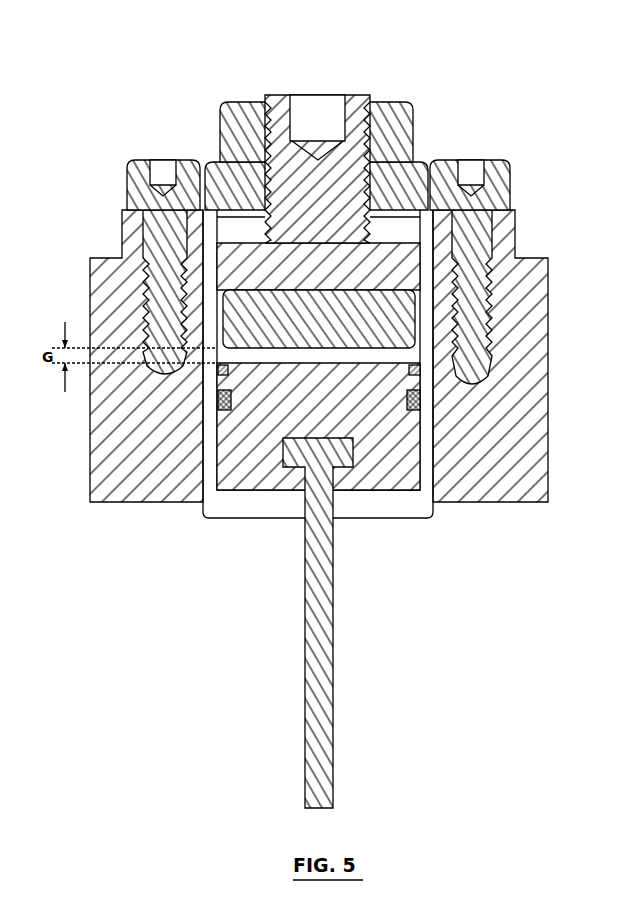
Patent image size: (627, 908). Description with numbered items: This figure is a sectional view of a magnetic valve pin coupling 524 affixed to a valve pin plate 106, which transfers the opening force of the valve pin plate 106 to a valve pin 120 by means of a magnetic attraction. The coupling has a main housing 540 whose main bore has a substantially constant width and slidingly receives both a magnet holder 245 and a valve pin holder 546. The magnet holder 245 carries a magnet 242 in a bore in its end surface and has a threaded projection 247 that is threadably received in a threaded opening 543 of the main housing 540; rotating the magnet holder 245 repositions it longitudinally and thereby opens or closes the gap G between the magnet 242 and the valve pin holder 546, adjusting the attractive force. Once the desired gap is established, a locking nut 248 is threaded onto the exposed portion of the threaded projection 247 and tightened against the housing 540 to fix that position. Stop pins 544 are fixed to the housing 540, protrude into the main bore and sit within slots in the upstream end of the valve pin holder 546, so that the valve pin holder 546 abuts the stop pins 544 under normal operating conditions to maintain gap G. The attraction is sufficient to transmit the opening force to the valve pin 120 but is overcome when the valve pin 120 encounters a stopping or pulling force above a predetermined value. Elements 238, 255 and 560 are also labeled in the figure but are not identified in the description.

The valve pin plate 106 is at (531, 510).
The valve pin 120 is at (334, 660).
The adjustment bolt 238 is at (337, 95).
The magnet 242 is at (402, 322).
The magnet holder 245 is at (404, 257).
The threaded projection 247 is at (222, 131).
The locking nut 248 is at (424, 105).
The seal ring 255 is at (220, 400).
The magnetic valve pin coupling 524 is at (560, 113).
The main housing 540 is at (432, 162).
The threaded opening 543 is at (216, 161).
The stop pins 544 is at (434, 386).
The valve pin holder 546 is at (398, 450).
The gap 560 is at (418, 519).